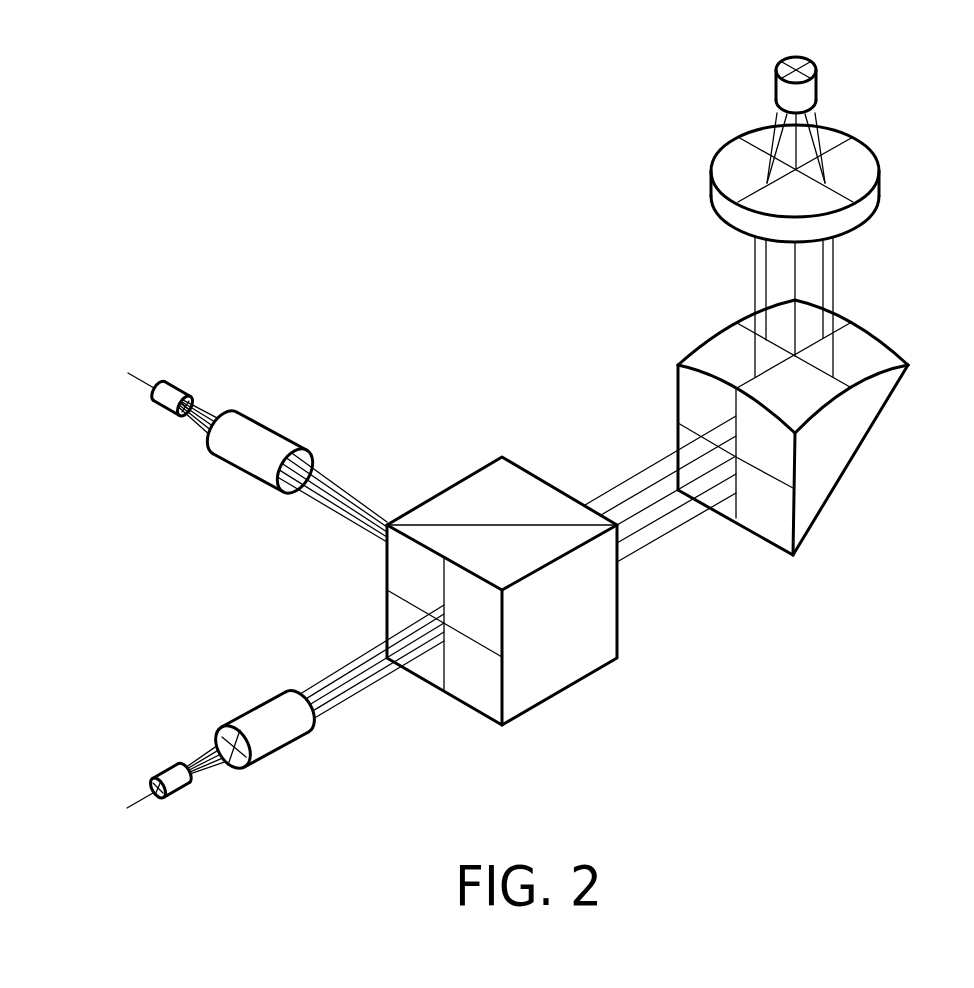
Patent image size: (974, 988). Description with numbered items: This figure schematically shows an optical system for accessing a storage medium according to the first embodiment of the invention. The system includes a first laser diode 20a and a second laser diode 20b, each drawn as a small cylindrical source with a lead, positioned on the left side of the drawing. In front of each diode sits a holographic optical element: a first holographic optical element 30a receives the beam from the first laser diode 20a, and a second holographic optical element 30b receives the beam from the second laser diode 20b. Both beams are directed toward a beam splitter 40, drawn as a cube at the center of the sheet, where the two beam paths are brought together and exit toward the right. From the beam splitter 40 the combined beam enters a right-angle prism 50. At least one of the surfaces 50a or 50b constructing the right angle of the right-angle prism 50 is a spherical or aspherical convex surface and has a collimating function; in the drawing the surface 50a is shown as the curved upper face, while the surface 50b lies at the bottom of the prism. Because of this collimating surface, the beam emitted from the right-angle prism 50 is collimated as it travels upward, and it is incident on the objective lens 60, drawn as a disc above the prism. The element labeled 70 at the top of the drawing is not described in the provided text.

The first laser diode 20a is at (163, 765).
The second laser diode 20b is at (175, 385).
The first holographic optical element 30a is at (253, 707).
The second holographic optical element 30b is at (263, 430).
The beam splitter 40 is at (523, 480).
The right-angle prism 50 is at (822, 452).
The surface of the right-angle prism 50a is at (880, 348).
The surface of the right-angle prism 50b is at (773, 537).
The objective lens 60 is at (728, 165).
The light source / motor 70 is at (783, 68).